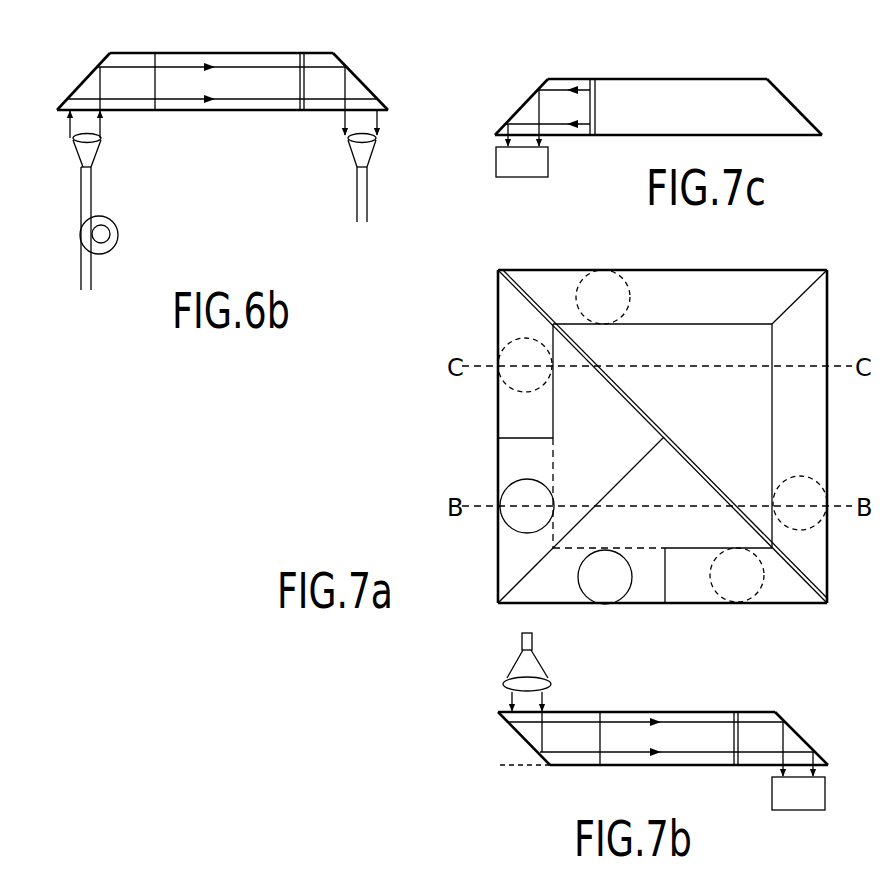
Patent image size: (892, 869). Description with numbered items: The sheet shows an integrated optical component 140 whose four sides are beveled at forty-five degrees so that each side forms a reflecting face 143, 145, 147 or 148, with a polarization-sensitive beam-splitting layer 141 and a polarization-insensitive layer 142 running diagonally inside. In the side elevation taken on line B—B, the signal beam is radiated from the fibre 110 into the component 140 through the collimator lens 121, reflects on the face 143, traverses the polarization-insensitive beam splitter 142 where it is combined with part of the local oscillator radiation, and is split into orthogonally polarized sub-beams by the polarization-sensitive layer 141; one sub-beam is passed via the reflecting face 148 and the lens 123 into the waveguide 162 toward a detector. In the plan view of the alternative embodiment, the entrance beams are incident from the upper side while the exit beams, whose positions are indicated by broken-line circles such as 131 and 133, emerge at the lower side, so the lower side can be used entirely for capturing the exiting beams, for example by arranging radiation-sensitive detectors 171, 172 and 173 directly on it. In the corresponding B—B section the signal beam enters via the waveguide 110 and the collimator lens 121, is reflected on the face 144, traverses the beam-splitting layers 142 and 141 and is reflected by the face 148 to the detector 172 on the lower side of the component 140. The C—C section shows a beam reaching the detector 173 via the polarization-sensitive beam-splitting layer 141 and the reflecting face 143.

In FIG. 6b, the fibre 110 is at (86, 193).
In FIG. 7b, the fibre 110 is at (521, 638).
In FIG. 6b, the collimator lens 121 is at (100, 140).
In FIG. 7a, the collimator lens 121 is at (517, 495).
In FIG. 7b, the collimator lens 121 is at (508, 683).
In FIG. 6b, the lens 123 is at (378, 141).
In FIG. 7a, the exit beam position 131 is at (603, 580).
In FIG. 7a, the exit beam position 133 is at (755, 592).
In FIG. 6b, the optical component 140 is at (268, 52).
In FIG. 6b, the polarization-sensitive beam-splitting layer 141 is at (300, 90).
In FIG. 7c, the polarization-sensitive beam-splitting layer 141 is at (594, 107).
In FIG. 7a, the polarization-sensitive beam-splitting layer 141 is at (817, 583).
In FIG. 7b, the polarization-sensitive beam-splitting layer 141 is at (738, 732).
In FIG. 6b, the polarization-insensitive layer 142 is at (155, 83).
In FIG. 7a, the polarization-insensitive layer 142 is at (637, 463).
In FIG. 7b, the polarization-insensitive layer 142 is at (600, 735).
In FIG. 6b, the reflecting face 143 is at (85, 79).
In FIG. 7c, the reflecting face 143 is at (522, 105).
In FIG. 7a, the reflecting face 143 is at (520, 413).
In FIG. 7b, the reflecting face 143 is at (523, 742).
In FIG. 7a, the reflecting face 144 is at (520, 554).
In FIG. 7b, the reflecting face 144 is at (510, 725).
In FIG. 7a, the reflecting face 145 is at (690, 583).
In FIG. 7c, the reflecting face 147 is at (658, 107).
In FIG. 7a, the reflecting face 147 is at (678, 290).
In FIG. 7b, the reflecting face 147 is at (663, 738).
In FIG. 6b, the reflecting face 148 is at (365, 80).
In FIG. 7a, the reflecting face 148 is at (815, 422).
In FIG. 7b, the reflecting face 148 is at (802, 733).
In FIG. 6b, the waveguide 162 is at (363, 197).
In FIG. 7a, the detector 171 is at (599, 288).
In FIG. 7a, the detector 172 is at (813, 473).
In FIG. 7b, the detector 172 is at (787, 795).
In FIG. 7c, the detector 173 is at (537, 163).
In FIG. 7a, the detector 173 is at (512, 343).